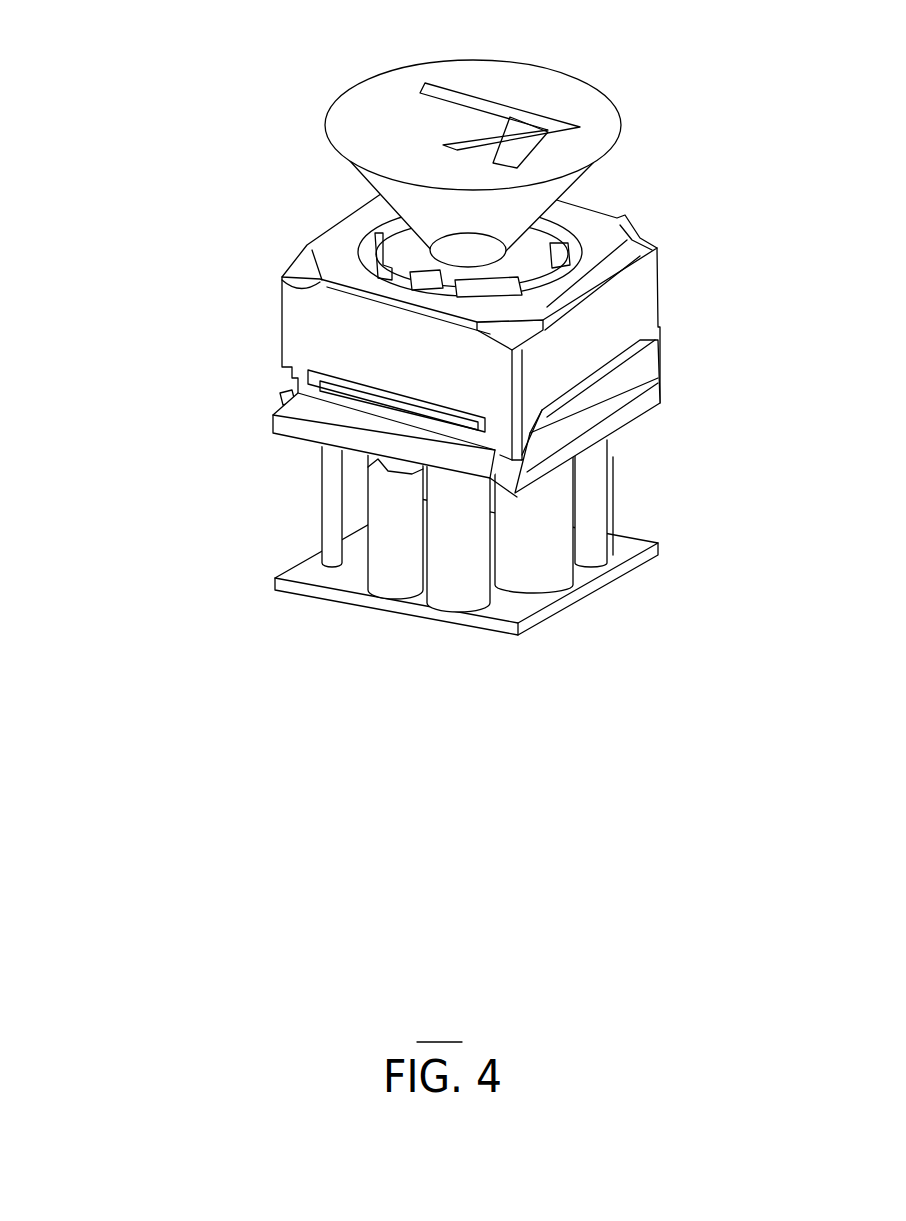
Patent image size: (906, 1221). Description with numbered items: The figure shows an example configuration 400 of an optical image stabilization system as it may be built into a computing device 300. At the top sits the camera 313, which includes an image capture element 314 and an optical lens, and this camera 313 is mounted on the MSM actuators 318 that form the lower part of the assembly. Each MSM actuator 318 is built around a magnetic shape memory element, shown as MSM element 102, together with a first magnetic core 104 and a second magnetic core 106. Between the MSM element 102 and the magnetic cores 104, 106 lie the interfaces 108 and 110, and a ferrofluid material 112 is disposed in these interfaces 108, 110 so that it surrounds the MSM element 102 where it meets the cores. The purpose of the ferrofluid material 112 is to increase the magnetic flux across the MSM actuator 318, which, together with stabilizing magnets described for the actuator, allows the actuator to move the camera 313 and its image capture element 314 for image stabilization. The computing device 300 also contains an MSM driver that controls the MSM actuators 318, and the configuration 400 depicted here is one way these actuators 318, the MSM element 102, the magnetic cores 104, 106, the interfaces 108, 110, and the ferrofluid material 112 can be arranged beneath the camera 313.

The computing device 300 is at (412, 404).
The camera 313 is at (282, 320).
The image capture element 314 is at (590, 260).
The MSM actuators 318 is at (376, 618).
The MSM element 102 is at (400, 566).
The first magnetic core 104 is at (340, 520).
The second magnetic core 106 is at (455, 583).
The interface 108 is at (365, 545).
The interface 110 is at (470, 552).
The ferrofluid material 112 is at (427, 572).
The configuration 400 is at (439, 1029).